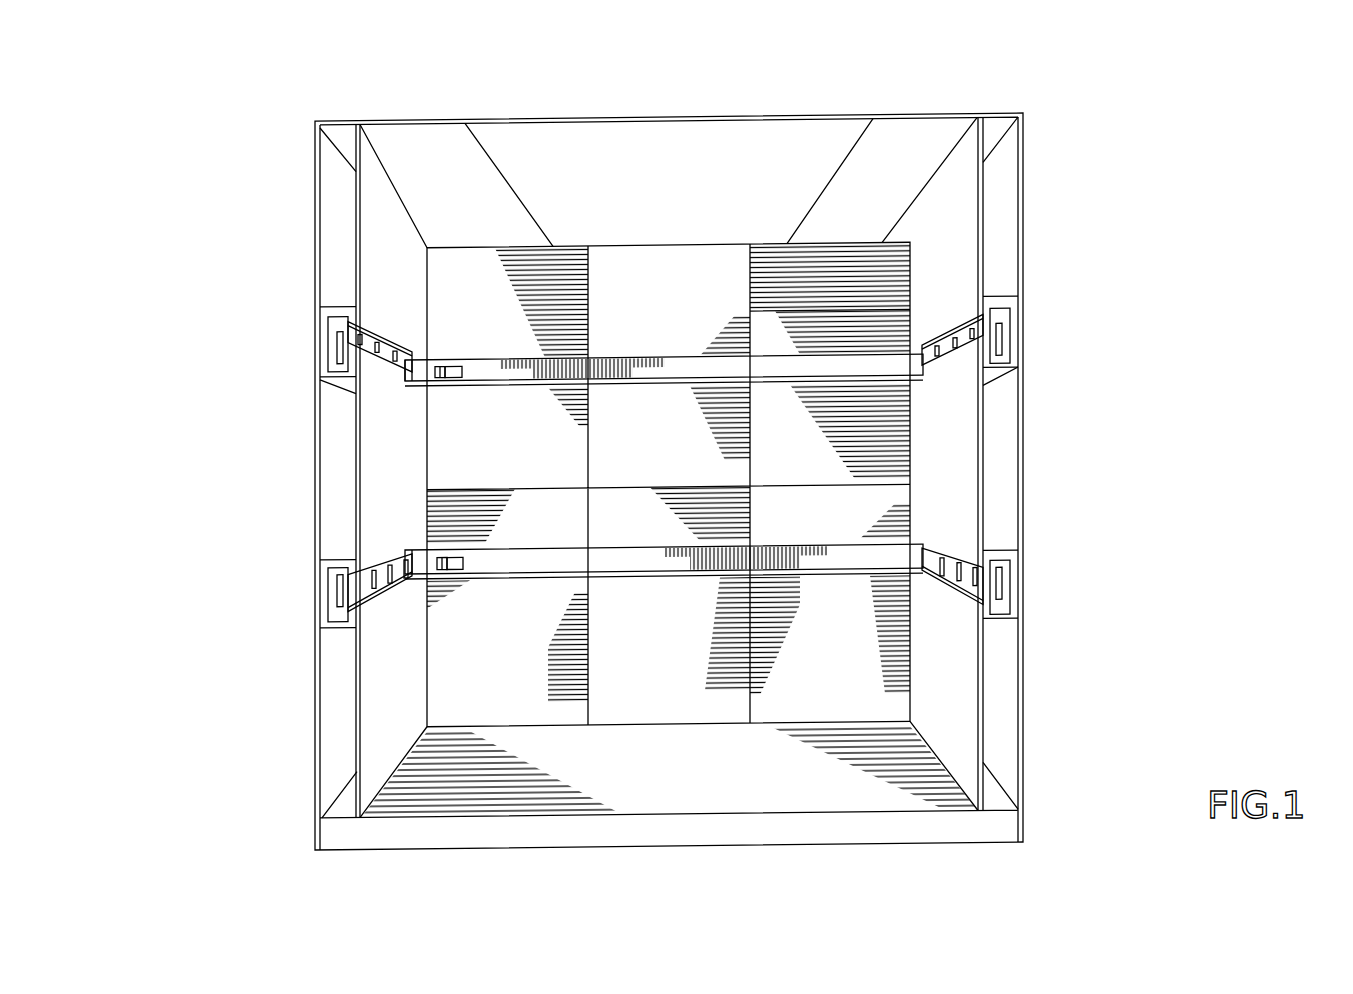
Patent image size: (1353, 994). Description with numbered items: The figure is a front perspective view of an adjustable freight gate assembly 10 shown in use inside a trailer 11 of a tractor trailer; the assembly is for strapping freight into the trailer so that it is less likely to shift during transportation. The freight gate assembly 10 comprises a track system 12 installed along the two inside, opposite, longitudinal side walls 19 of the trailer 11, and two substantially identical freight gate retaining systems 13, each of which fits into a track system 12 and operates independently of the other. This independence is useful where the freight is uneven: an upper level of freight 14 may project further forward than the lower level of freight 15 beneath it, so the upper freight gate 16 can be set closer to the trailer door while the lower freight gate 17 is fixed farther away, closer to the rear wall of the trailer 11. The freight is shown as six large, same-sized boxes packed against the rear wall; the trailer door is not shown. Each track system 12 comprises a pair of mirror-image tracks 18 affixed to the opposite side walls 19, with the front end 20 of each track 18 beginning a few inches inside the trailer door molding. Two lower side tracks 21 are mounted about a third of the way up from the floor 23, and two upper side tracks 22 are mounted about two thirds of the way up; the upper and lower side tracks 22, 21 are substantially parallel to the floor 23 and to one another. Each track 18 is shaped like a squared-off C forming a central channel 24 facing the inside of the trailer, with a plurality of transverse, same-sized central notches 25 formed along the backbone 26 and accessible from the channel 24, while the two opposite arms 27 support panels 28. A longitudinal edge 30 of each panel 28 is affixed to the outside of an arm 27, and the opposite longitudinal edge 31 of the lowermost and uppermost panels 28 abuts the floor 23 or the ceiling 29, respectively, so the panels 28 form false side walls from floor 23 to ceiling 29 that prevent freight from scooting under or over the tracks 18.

The adjustable freight gate assembly 10 is at (1033, 303).
The trailer 11 is at (1003, 113).
The track system 12 is at (313, 341).
The freight gate retaining system 13 is at (455, 357).
The upper level of freight 14 is at (478, 290).
The lower level of freight 15 is at (672, 670).
The upper freight gate 16 is at (605, 358).
The lower freight gate 17 is at (540, 545).
The track 18 is at (372, 340).
The longitudinal side wall 19 is at (354, 249).
The front end of the track 20 is at (332, 626).
The lower side track 21 is at (340, 556).
The upper side track 22 is at (325, 370).
The floor 23 is at (698, 790).
The central channel 24 is at (962, 553).
The central notch 25 is at (395, 380).
The backbone 26 is at (1007, 355).
The arm 27 is at (985, 323).
The panel 28 is at (951, 311).
The ceiling 29 is at (888, 204).
The longitudinal edge of panel 30 is at (398, 348).
The opposite longitudinal edge 31 is at (975, 172).